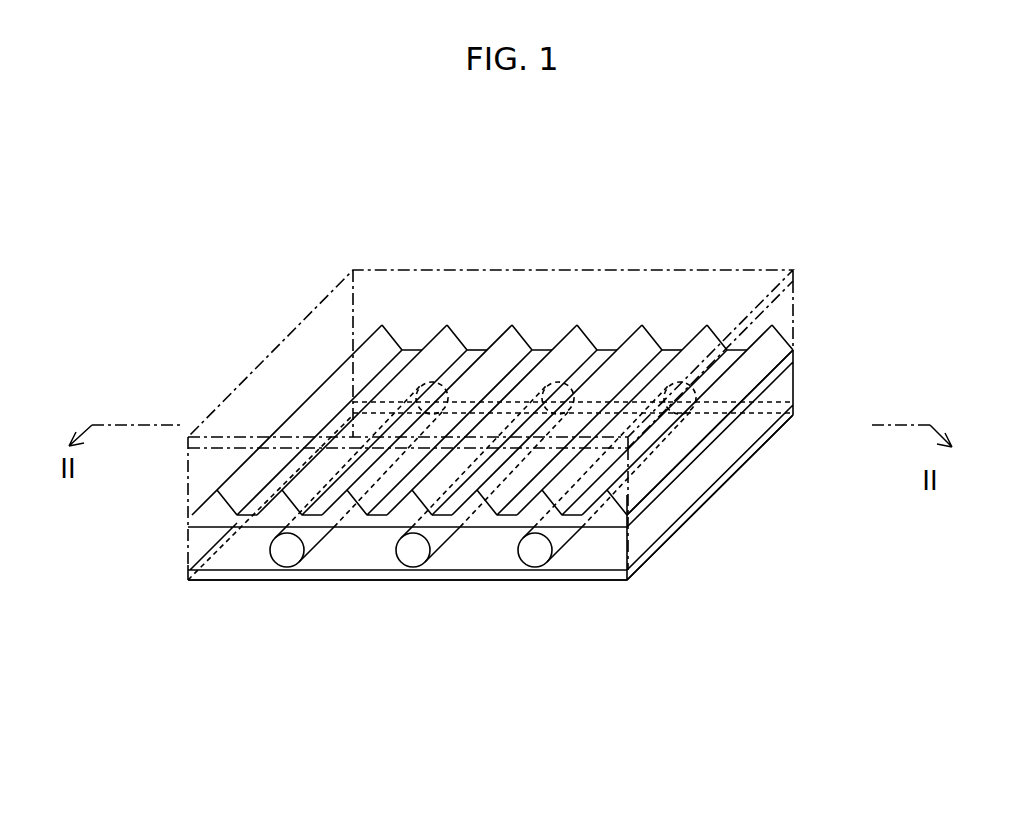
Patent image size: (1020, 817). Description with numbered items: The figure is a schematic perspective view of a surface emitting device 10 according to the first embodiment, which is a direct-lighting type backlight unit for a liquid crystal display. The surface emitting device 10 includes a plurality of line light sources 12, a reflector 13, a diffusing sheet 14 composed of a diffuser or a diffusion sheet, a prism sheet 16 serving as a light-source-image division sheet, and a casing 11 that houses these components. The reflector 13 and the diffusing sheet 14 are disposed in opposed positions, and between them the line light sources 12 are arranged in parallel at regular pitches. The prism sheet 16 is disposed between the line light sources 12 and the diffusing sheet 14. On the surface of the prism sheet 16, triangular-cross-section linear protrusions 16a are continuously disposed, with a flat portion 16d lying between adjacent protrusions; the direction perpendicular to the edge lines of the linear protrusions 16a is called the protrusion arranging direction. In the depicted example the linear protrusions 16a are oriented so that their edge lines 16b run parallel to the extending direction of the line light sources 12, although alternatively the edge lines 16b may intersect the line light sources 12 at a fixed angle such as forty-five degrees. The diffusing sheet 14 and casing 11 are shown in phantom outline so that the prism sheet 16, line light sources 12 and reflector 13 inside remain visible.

The surface emitting device 10 is at (244, 723).
The casing 11 is at (794, 325).
The line light sources 12 is at (288, 558).
The reflector 13 is at (597, 545).
The diffusing sheet 14 is at (444, 271).
The prism sheet 16 is at (689, 456).
The linear protrusions 16a is at (567, 350).
The edge lines 16b is at (470, 352).
The flat portion 16d is at (662, 353).